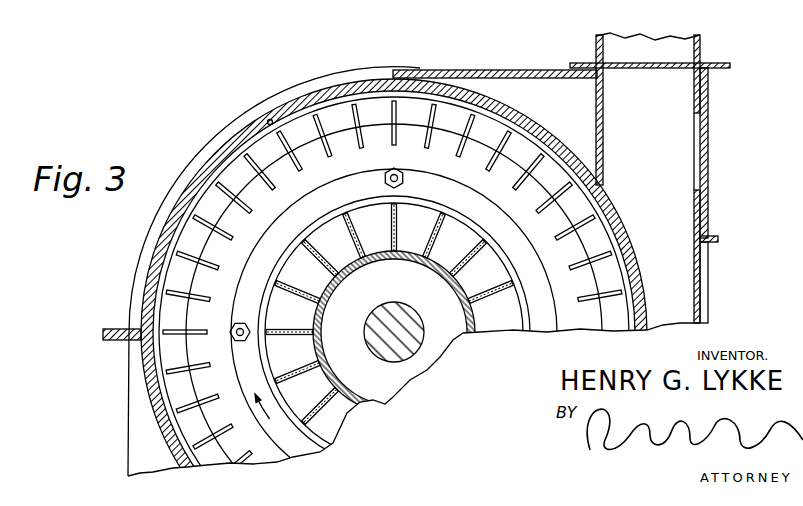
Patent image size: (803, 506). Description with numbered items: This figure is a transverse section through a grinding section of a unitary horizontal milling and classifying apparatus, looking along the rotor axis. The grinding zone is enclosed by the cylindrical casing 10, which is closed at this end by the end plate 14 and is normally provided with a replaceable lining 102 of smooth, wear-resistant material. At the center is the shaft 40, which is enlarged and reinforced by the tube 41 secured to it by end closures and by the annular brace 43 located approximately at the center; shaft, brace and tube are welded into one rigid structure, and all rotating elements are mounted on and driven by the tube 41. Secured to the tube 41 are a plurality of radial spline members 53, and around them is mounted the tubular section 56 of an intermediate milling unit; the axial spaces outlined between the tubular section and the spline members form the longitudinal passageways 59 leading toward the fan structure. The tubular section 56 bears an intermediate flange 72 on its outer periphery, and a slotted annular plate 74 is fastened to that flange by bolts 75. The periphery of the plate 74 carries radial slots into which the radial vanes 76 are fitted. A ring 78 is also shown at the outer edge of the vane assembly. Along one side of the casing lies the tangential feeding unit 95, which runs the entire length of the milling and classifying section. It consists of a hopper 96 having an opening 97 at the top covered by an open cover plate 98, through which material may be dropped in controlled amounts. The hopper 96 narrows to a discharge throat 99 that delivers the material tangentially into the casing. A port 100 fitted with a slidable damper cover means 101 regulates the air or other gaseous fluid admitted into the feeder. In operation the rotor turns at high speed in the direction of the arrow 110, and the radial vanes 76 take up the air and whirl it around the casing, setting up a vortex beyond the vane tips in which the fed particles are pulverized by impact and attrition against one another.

The cylindrical casing 10 is at (347, 71).
The end plate 14 is at (308, 80).
The shaft 40 is at (413, 322).
The tube 41 is at (317, 323).
The annular brace 43 is at (401, 286).
The radial spline members 53 is at (343, 243).
The tubular section 56 is at (263, 310).
The longitudinal passageways 59 is at (465, 248).
The intermediate flange 72 is at (277, 226).
The slotted annular plate 74 is at (241, 262).
The bolts 75 is at (404, 181).
The radial vanes 76 is at (392, 291).
The outer ring 78 is at (268, 156).
The tangential feeding unit 95 is at (710, 95).
The hopper 96 is at (652, 149).
The opening 97 is at (673, 74).
The open cover plate 98 is at (668, 50).
The discharge throat 99 is at (682, 316).
The port 100 is at (695, 141).
The slidable damper cover means 101 is at (719, 238).
The replaceable lining 102 is at (270, 118).
The direction arrow 110 is at (272, 402).